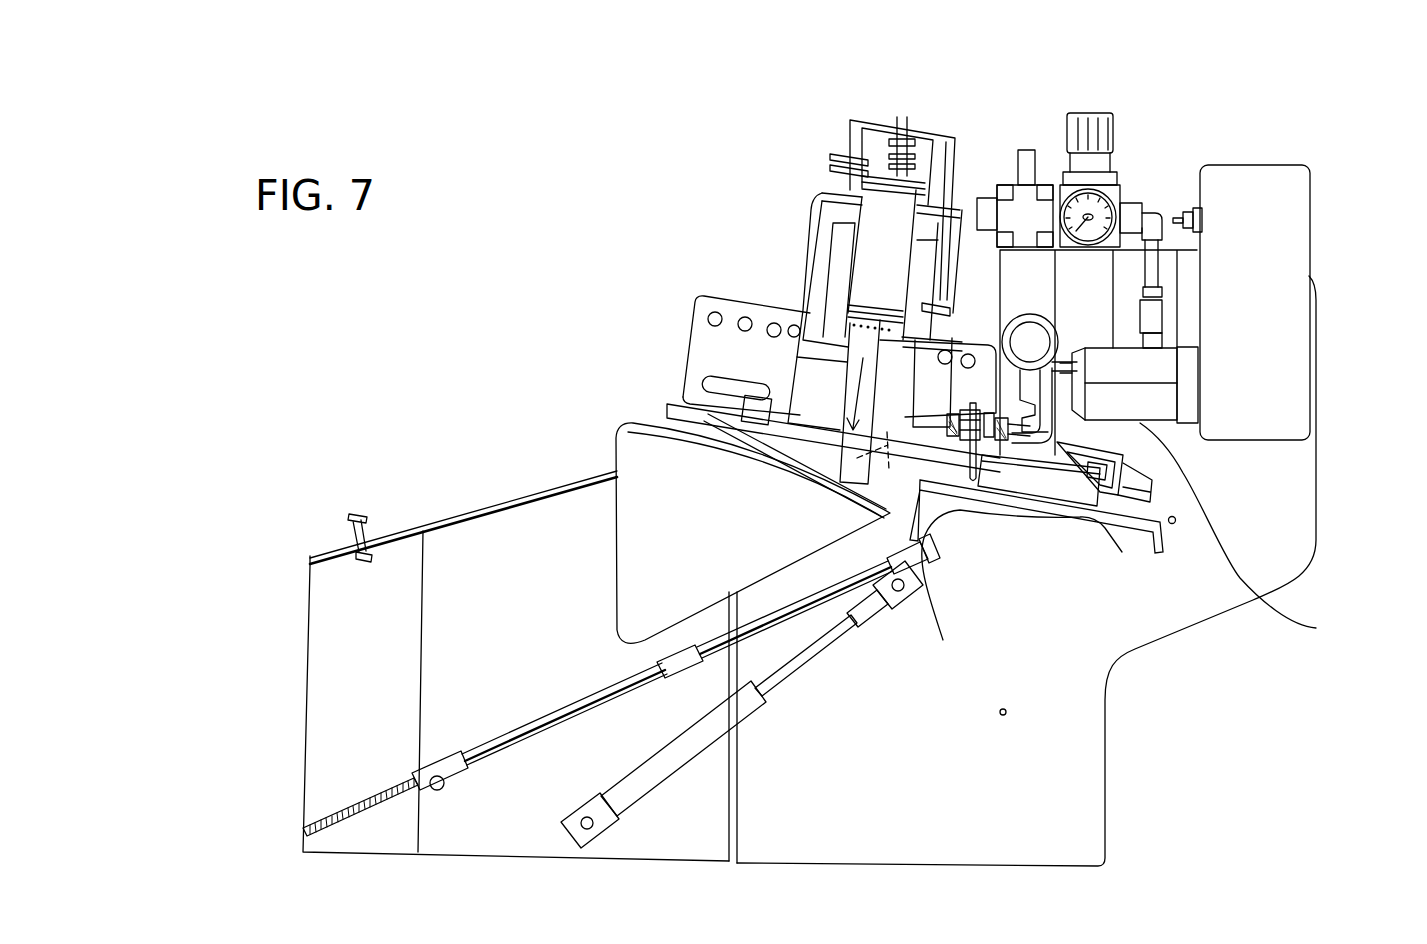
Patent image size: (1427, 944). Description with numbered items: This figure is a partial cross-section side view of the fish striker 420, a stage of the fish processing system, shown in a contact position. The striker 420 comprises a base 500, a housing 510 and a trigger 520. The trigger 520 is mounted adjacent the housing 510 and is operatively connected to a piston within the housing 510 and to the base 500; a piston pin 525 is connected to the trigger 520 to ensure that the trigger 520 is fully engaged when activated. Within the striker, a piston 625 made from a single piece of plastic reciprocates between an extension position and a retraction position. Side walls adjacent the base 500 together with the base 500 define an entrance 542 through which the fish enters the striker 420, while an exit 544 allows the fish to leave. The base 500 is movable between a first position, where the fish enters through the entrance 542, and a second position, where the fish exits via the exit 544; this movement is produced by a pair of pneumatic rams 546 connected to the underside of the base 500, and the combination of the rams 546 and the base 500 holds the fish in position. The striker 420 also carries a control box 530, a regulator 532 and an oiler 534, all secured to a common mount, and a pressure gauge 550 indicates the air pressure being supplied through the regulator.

The striker 420 is at (1343, 173).
The base 500 is at (535, 720).
The housing 510 is at (823, 136).
The trigger 520 is at (1122, 528).
The piston pin 525 is at (1030, 414).
The control box 530 is at (1290, 273).
The regulator 532 is at (1095, 137).
The oiler 534 is at (993, 525).
The entrance 542 is at (357, 728).
The exit 544 is at (1147, 727).
The pneumatic rams 546 is at (757, 703).
The pressure gauge 550 is at (1060, 212).
The piston 625 is at (857, 447).